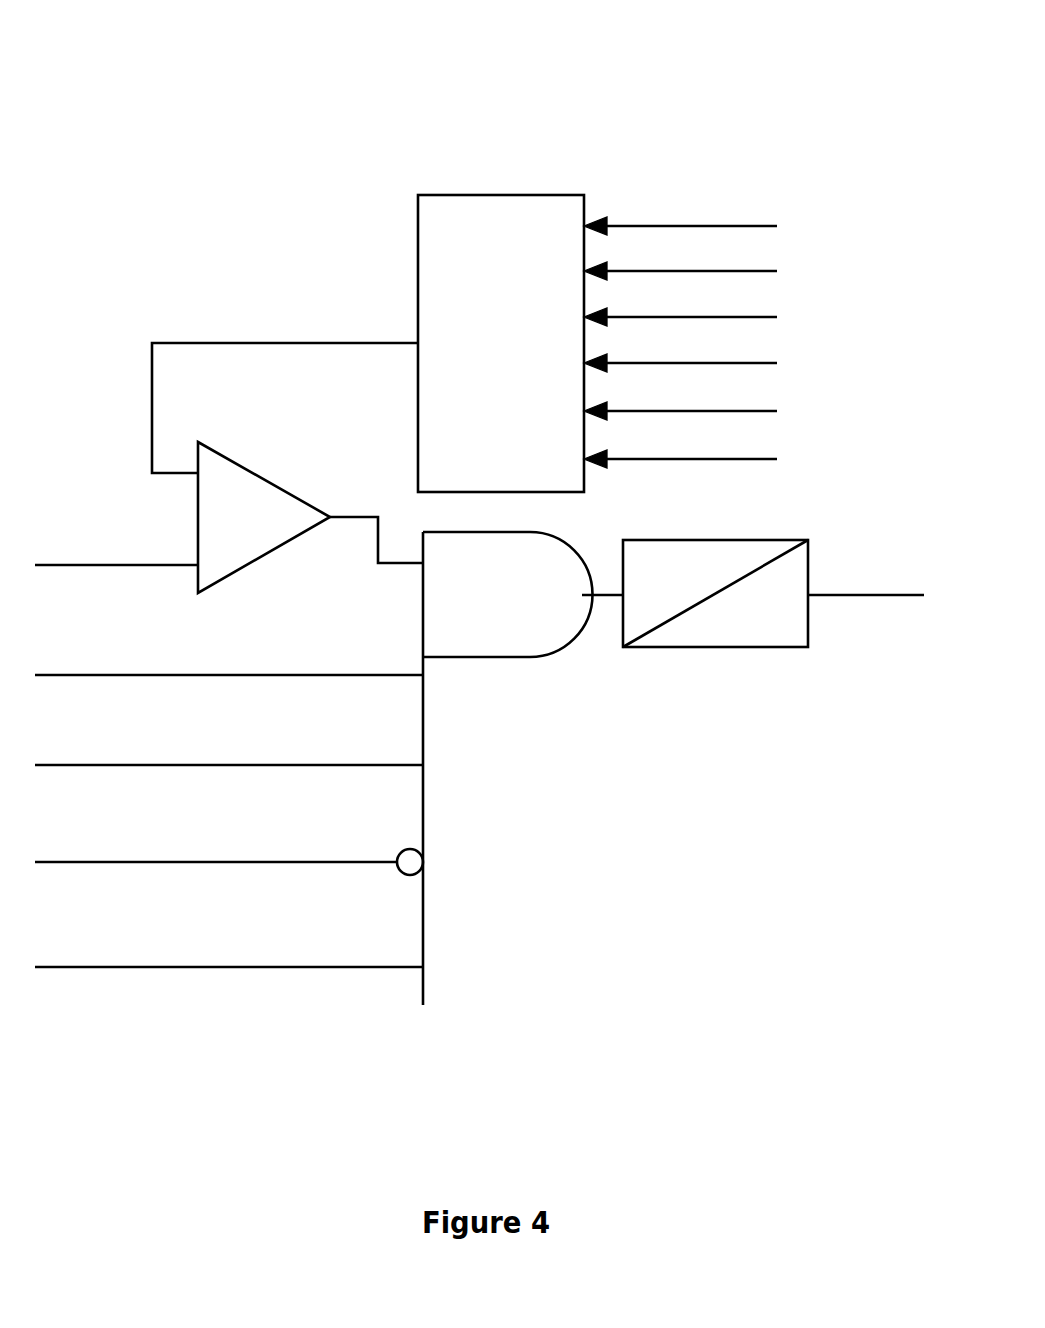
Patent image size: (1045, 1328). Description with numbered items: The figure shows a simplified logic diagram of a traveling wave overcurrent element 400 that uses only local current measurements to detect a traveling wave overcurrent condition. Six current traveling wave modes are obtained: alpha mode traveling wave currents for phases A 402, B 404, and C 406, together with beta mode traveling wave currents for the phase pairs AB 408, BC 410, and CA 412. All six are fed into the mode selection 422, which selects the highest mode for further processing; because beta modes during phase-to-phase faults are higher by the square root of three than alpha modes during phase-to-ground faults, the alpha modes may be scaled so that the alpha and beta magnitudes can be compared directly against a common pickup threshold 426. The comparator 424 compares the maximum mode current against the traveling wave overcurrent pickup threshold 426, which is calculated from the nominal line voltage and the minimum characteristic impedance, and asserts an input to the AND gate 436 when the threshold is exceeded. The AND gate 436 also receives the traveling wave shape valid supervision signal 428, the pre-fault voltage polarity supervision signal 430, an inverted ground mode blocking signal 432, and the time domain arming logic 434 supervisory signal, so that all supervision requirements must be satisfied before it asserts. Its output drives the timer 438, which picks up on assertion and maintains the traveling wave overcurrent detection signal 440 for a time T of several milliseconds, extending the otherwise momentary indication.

The traveling wave overcurrent element 400 is at (620, 45).
The alpha mode traveling wave current for phase A 402 is at (680, 216).
The alpha mode traveling wave current for phase B 404 is at (680, 261).
The alpha mode traveling wave current for phase C 406 is at (680, 307).
The beta mode traveling wave current for phase pair AB 408 is at (680, 353).
The beta mode traveling wave current for phase pair BC 410 is at (680, 401).
The beta mode traveling wave current for phase pair CA 412 is at (680, 449).
The mode selection 422 is at (490, 195).
The comparator 424 is at (250, 468).
The traveling wave overcurrent pickup threshold 426 is at (116, 549).
The traveling wave shape valid supervision signal 428 is at (228, 659).
The pre-fault voltage polarity supervision signal 430 is at (229, 749).
The ground mode blocking signal 432 is at (227, 851).
The time domain arming logic supervisory signal 434 is at (227, 952).
The AND gate 436 is at (508, 660).
The timer 438 is at (733, 648).
The traveling wave overcurrent detection signal 440 is at (898, 598).